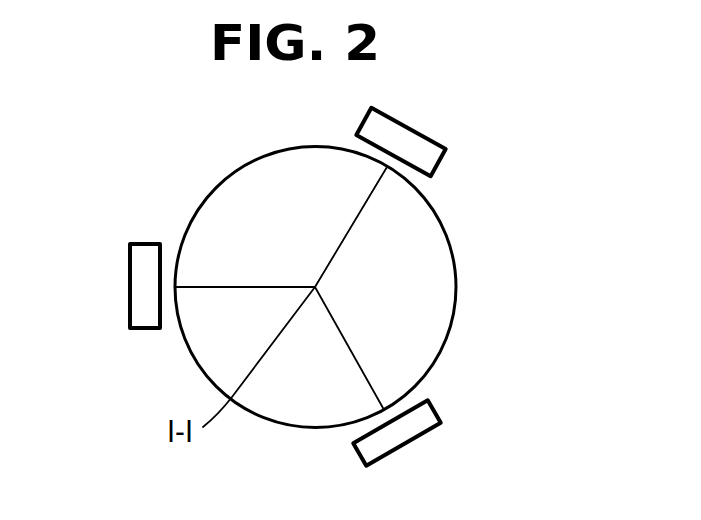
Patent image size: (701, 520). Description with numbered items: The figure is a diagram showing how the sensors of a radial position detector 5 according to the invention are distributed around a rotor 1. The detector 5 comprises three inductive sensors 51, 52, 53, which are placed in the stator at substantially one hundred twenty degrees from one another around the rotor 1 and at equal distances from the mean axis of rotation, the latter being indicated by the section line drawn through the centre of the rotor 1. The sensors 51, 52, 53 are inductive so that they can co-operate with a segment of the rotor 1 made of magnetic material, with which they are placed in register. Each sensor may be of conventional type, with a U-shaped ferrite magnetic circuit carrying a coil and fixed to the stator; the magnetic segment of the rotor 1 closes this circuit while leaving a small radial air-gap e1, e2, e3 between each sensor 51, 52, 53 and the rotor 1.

The rotor 1 is at (417, 299).
The radial position detector 5 is at (218, 174).
The inductive sensor 51 is at (143, 273).
The inductive sensor 52 is at (415, 423).
The inductive sensor 53 is at (392, 130).
The radial air-gap e1 is at (172, 293).
The radial air-gap e2 is at (373, 418).
The radial air-gap e3 is at (388, 160).